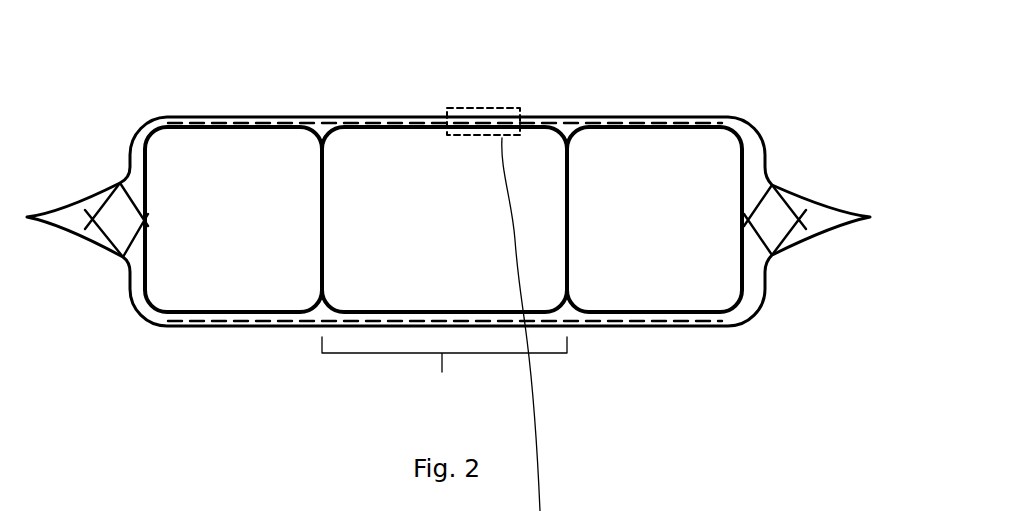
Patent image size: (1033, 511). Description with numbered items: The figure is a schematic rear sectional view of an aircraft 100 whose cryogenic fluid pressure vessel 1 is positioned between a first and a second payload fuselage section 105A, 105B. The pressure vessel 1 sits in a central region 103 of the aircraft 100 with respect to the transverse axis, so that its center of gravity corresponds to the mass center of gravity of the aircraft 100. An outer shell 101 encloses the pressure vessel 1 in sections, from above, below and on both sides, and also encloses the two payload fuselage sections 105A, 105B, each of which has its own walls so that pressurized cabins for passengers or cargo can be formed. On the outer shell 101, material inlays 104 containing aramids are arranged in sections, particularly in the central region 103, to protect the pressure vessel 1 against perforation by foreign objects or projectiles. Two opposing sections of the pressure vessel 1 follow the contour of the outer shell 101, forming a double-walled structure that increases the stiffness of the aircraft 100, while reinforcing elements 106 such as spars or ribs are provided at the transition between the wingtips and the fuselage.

The aircraft 100 is at (737, 65).
The outer shell 101 is at (752, 312).
The central region 103 is at (444, 372).
The material inlays 104 is at (150, 124).
The first payload fuselage section 105A is at (240, 163).
The second payload fuselage section 105B is at (643, 165).
The cryogenic fluid pressure vessel 1 is at (413, 152).
The reinforcing elements 106 is at (132, 213).